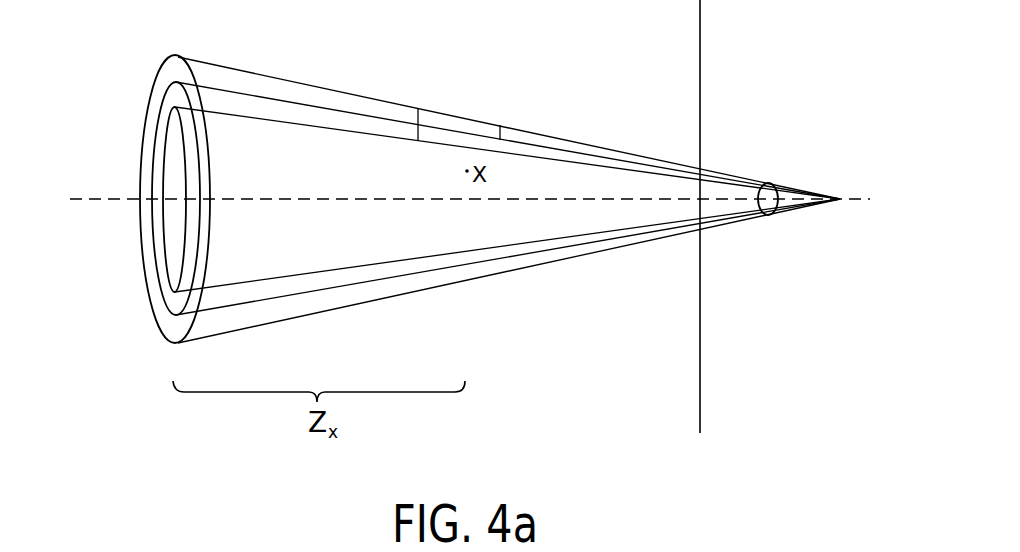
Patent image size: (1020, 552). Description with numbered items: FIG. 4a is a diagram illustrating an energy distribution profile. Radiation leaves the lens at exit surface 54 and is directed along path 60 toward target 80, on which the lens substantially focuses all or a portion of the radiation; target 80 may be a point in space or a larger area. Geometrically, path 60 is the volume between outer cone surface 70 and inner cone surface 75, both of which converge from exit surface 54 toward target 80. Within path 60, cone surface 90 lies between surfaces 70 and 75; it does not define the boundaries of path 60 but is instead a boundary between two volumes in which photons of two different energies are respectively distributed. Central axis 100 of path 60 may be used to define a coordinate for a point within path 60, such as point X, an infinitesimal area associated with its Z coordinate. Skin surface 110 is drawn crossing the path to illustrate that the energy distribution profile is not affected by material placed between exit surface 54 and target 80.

The exit surface 54 is at (172, 68).
The path 60 is at (265, 87).
The outer cone surface 70 is at (337, 92).
The inner cone surface 75 is at (418, 110).
The target 80 is at (768, 187).
The cone surface 90 is at (500, 125).
The central axis 100 is at (98, 200).
The skin surface 110 is at (700, 412).